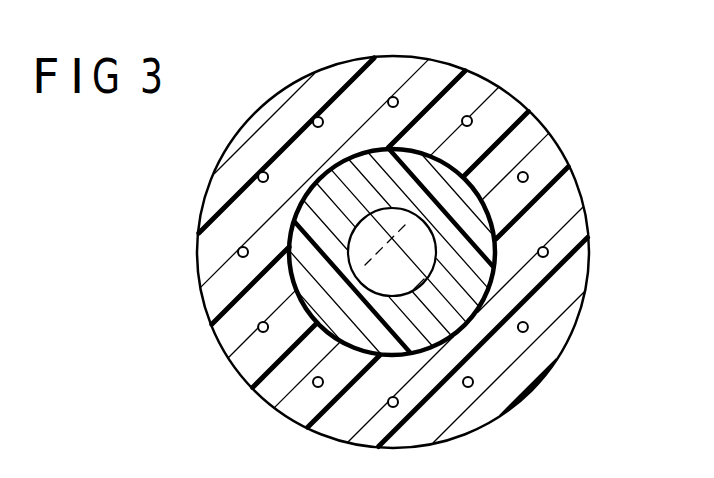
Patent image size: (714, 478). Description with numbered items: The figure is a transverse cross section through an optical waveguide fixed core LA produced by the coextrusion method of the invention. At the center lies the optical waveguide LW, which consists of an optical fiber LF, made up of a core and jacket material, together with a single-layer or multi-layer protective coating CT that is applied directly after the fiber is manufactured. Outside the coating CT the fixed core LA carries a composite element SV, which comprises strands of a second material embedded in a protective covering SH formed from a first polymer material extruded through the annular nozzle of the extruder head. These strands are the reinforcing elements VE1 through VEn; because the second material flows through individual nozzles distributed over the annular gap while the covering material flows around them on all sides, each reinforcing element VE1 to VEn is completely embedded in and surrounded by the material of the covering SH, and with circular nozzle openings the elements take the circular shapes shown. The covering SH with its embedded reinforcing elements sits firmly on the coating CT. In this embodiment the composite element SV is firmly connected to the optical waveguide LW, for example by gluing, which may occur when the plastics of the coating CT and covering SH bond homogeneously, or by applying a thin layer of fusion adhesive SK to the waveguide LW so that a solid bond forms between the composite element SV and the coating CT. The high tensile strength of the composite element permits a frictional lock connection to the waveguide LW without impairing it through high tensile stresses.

The optical waveguide fixed core LA is at (590, 290).
The fusion adhesive SK is at (371, 148).
The optical waveguide LW is at (298, 271).
The optical fiber LF is at (368, 242).
The protective coating CT is at (467, 229).
The protective covering SH is at (524, 127).
The composite element SV is at (264, 334).
The first reinforcing element VE1 is at (470, 121).
The n-th reinforcing element VEn is at (525, 174).